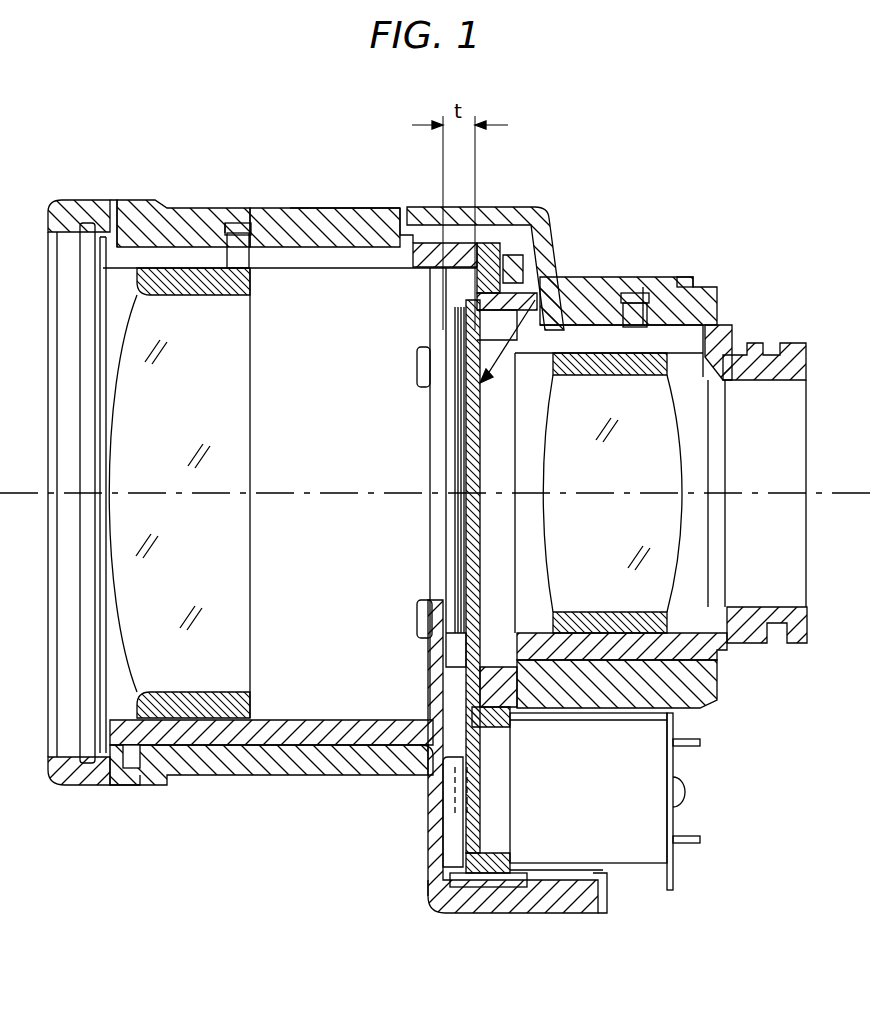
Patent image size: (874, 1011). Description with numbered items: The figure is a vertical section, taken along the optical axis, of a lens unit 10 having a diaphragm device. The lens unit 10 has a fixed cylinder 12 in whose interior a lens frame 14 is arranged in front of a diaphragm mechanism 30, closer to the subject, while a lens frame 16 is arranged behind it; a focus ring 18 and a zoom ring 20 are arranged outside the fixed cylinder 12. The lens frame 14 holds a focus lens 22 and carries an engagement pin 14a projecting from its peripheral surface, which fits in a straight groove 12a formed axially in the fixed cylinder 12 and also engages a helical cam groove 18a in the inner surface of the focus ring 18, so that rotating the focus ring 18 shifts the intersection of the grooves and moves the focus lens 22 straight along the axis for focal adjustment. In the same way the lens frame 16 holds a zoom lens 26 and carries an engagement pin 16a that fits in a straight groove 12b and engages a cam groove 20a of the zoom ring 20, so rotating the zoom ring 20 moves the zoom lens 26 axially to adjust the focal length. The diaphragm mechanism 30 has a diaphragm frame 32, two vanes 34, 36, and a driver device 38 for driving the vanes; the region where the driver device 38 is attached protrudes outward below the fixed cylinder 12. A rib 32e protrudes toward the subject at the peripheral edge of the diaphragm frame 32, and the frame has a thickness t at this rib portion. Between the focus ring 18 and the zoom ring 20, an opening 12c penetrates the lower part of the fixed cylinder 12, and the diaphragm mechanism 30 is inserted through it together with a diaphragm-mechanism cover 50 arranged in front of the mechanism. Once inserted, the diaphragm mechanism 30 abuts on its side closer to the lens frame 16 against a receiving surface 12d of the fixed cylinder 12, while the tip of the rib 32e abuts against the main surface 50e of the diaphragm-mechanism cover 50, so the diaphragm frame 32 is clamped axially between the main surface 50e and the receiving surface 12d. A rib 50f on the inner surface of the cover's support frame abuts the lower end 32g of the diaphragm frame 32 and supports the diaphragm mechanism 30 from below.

The lens unit 10 is at (118, 900).
The fixed cylinder 12 is at (225, 735).
The straight groove 12a is at (362, 250).
The straight groove 12b is at (588, 335).
The opening 12c is at (433, 763).
The receiving surface 12d is at (433, 240).
The lens frame 14 is at (193, 248).
The engagement pin 14a is at (233, 243).
The lens frame 16 is at (680, 343).
The engagement pin 16a is at (637, 303).
The focus ring 18 is at (320, 228).
The cam groove 18a is at (240, 216).
The zoom ring 20 is at (610, 277).
The cam groove 20a is at (650, 353).
The focus lens 22 is at (163, 315).
The zoom lens 26 is at (760, 347).
The diaphragm mechanism 30 is at (553, 280).
The diaphragm frame 32 is at (470, 682).
The rib 32e is at (478, 255).
The lower end 32g is at (480, 887).
The vane 34 is at (456, 417).
The vane 36 is at (463, 457).
The driver device 38 is at (613, 850).
The diaphragm-mechanism cover 50 is at (437, 667).
The main surface 50e is at (597, 885).
The rib 50f is at (463, 888).